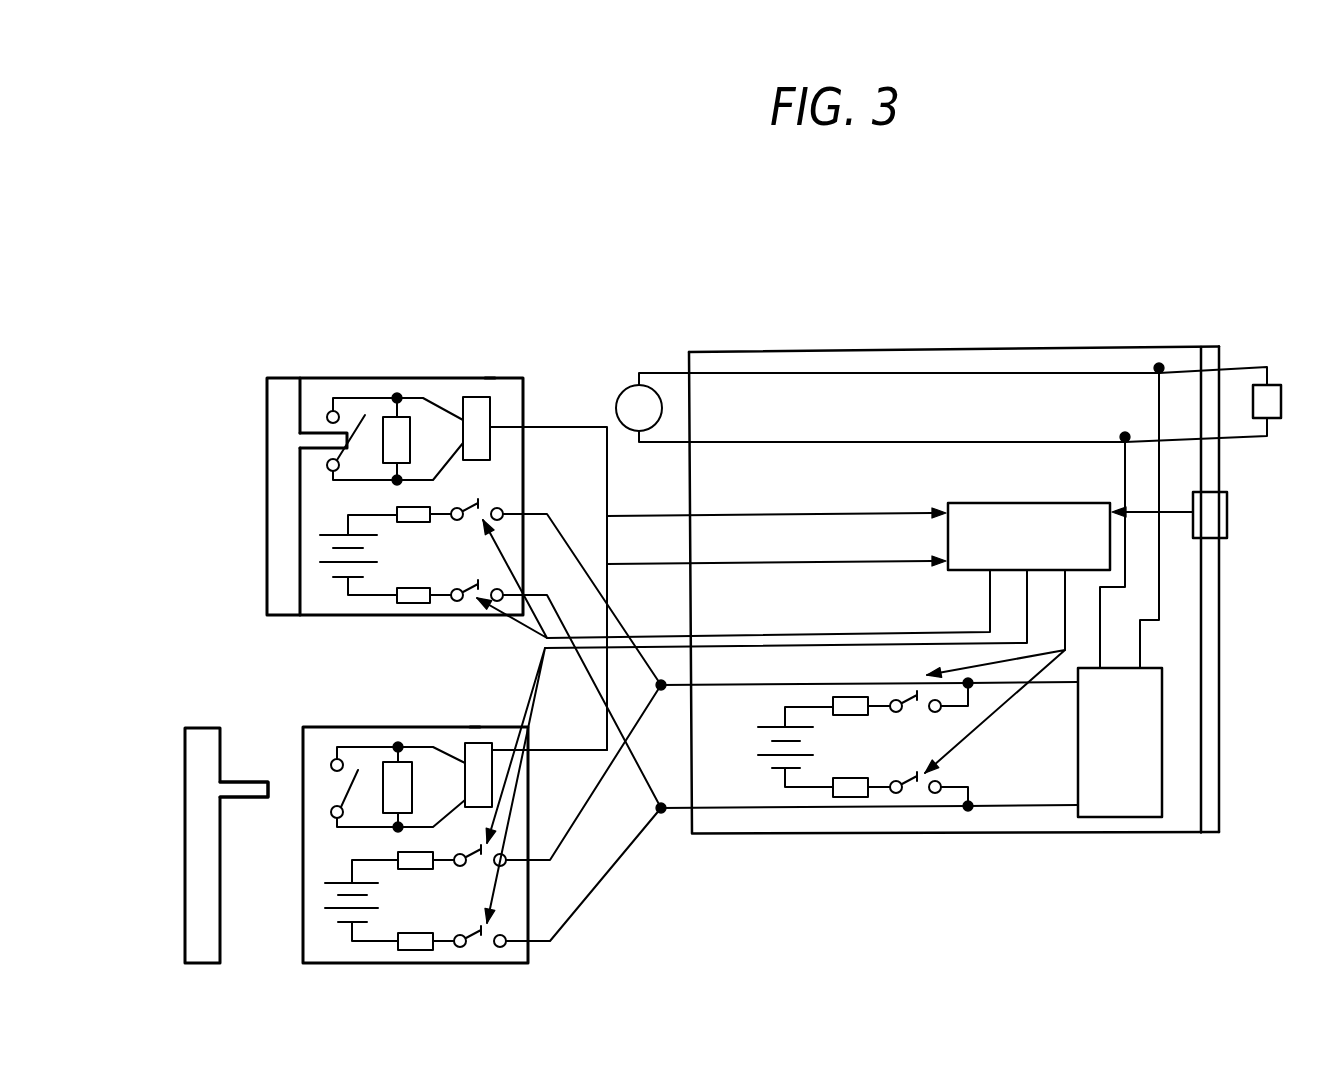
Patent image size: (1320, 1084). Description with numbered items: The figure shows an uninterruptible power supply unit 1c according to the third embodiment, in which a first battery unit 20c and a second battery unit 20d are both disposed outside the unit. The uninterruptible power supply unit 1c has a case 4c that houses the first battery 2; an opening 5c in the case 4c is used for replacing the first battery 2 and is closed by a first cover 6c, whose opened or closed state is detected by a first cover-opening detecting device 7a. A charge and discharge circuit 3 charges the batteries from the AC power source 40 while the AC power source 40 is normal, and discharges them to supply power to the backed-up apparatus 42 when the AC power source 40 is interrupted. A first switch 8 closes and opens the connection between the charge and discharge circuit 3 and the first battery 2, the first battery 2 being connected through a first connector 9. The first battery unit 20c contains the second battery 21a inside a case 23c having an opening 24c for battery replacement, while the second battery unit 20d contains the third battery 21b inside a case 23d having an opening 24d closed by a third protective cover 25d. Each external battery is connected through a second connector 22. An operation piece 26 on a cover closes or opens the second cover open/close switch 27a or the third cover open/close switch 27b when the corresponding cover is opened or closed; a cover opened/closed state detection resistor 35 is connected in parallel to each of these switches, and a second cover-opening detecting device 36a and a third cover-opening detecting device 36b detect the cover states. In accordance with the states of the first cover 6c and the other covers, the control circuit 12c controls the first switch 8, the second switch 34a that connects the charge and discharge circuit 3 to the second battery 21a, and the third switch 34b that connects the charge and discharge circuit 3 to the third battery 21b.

The uninterruptible power supply unit 1c is at (871, 292).
The first battery 2 is at (757, 747).
The charge and discharge circuit 3 is at (1162, 742).
The case 4c is at (1028, 347).
The opening 5c is at (1202, 347).
The first cover 6c is at (1219, 648).
The first cover-opening detecting device 7a is at (1227, 515).
The first switch 8 is at (913, 695).
The first connector 9 is at (853, 710).
The control circuit 12c is at (1010, 503).
The first battery unit 20c is at (412, 316).
The second battery unit 20d is at (407, 700).
The second battery 21a is at (327, 533).
The third battery 21b is at (327, 883).
The second connector 22 is at (413, 522).
The case 23c is at (490, 378).
The case 23d is at (475, 725).
The opening 24c is at (300, 378).
The opening 24d is at (267, 378).
The third protective cover 25d is at (188, 728).
The operation piece 26 is at (300, 440).
The second cover open/close switch 27a is at (360, 417).
The third cover open/close switch 27b is at (351, 785).
The second switch 34a is at (472, 512).
The third switch 34b is at (470, 868).
The cover opened/closed state detection resistor 35 is at (410, 433).
The second cover-opening detecting device 36a is at (490, 410).
The third cover-opening detecting device 36b is at (480, 743).
The AC power source 40 is at (620, 395).
The backed-up apparatus 42 is at (1280, 385).